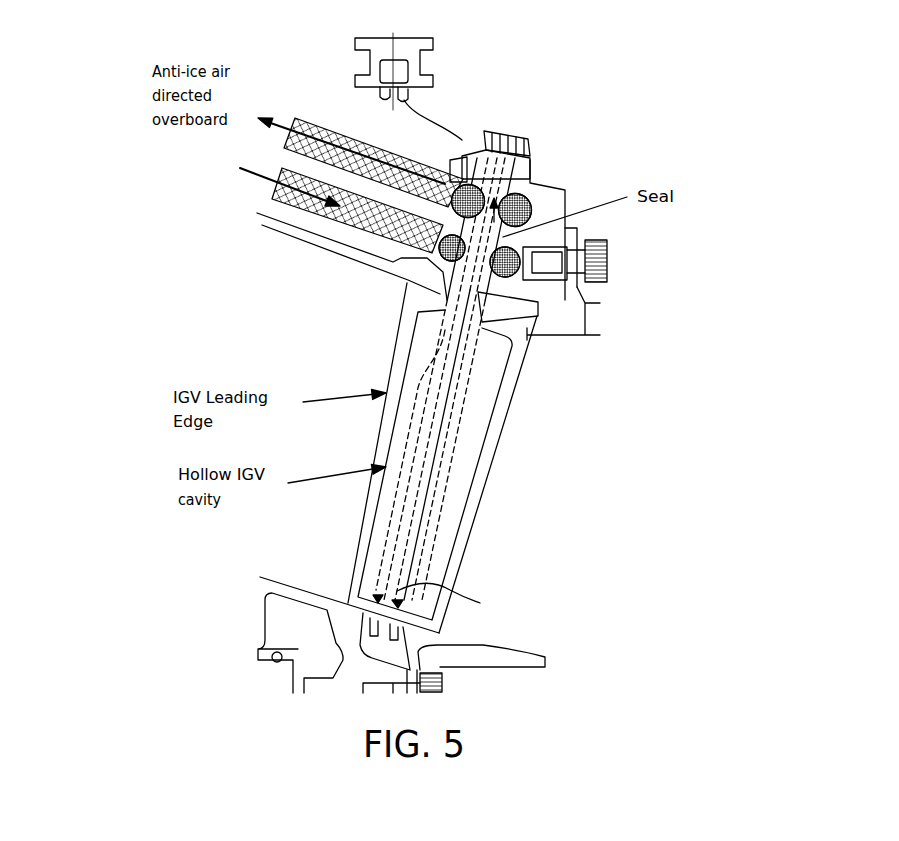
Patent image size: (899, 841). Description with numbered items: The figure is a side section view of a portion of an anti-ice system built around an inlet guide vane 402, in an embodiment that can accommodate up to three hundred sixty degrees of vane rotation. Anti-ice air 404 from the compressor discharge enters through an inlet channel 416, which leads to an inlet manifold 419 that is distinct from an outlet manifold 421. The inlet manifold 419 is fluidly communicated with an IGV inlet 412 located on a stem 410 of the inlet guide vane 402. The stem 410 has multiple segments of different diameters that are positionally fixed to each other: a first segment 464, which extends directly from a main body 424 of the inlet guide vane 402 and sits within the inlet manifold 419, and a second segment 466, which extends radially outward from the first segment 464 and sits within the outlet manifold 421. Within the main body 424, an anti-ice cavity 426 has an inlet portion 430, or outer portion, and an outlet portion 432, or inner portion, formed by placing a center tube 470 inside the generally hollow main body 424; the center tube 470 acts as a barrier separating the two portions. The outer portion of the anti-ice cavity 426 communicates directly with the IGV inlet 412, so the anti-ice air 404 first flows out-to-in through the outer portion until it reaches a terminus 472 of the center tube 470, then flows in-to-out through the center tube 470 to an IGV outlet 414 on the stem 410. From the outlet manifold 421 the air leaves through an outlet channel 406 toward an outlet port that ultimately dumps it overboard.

The inlet guide vane 402 is at (421, 458).
The anti-ice air 404 is at (236, 207).
The outlet channel 406 is at (312, 120).
The stem 410 is at (525, 238).
The IGV inlet 412 is at (437, 222).
The IGV outlet 414 is at (485, 131).
The inlet channel 416 is at (397, 217).
The inlet manifold 419 is at (445, 250).
The outlet manifold 421 is at (537, 192).
The main body 424 is at (483, 487).
The anti-ice cavity 426 is at (500, 358).
The inlet portion 430 is at (393, 517).
The outlet portion 432 is at (443, 390).
The first segment 464 is at (583, 379).
The second segment 466 is at (510, 160).
The center tube 470 is at (450, 423).
The terminus 472 is at (480, 603).